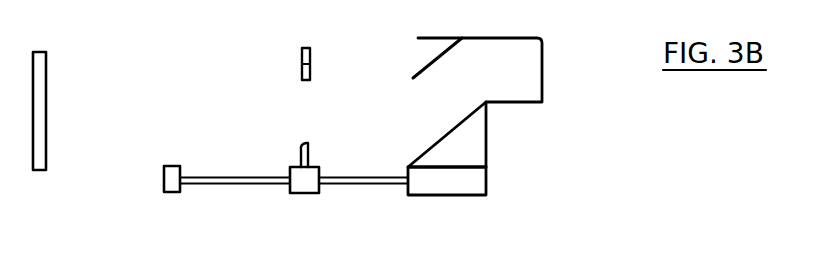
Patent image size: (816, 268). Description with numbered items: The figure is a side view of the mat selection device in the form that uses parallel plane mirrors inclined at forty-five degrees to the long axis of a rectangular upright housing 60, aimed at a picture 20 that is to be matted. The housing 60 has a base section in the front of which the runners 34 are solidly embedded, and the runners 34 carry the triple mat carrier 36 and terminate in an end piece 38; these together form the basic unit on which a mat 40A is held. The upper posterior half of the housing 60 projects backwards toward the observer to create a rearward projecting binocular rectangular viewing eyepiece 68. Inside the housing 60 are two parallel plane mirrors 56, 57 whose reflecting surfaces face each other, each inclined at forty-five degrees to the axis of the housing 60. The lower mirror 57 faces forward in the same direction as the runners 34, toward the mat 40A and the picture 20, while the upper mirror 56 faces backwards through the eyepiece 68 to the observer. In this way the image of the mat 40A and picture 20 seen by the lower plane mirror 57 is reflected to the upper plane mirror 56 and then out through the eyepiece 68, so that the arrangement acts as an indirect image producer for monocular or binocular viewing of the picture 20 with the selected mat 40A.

The picture 20 is at (89, 111).
The runners 34 is at (294, 221).
The triple mat carrier 36 is at (367, 212).
The end piece 38 is at (212, 212).
The mat 40A is at (361, 88).
The upper plane mirror 56 is at (465, 39).
The lower plane mirror 57 is at (502, 145).
The housing 60 is at (492, 202).
The binocular eyepiece 68 is at (509, 83).